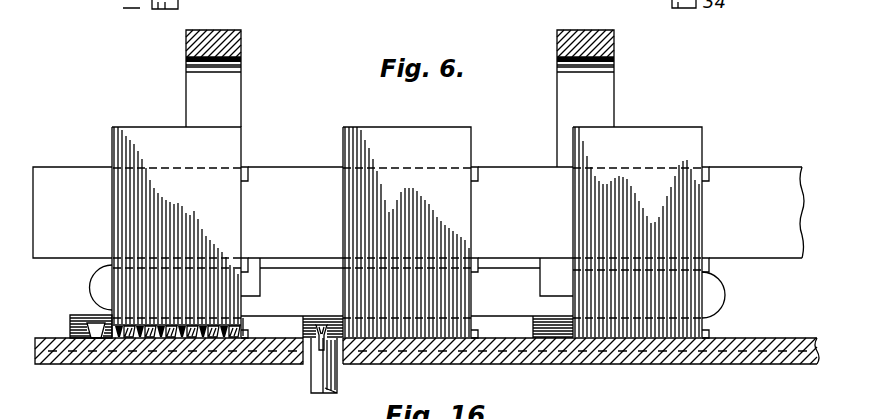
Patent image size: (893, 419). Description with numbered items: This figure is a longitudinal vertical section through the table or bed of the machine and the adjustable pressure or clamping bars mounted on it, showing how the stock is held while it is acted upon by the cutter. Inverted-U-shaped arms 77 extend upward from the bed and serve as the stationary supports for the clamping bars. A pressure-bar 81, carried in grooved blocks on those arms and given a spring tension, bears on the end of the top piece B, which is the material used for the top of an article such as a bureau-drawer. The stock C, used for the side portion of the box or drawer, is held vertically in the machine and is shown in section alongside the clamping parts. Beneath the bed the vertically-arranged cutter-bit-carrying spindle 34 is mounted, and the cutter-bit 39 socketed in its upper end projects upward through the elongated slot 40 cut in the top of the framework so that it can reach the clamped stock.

The inverted-U-shaped arm 77 is at (244, 73).
The stock C is at (127, 211).
The top piece B is at (71, 317).
The elongated slot 40 is at (305, 344).
The cutter-bit 39 is at (320, 325).
The cutter-bit-carrying spindle 34 is at (319, 377).
The pressure-bar 81 is at (712, 295).